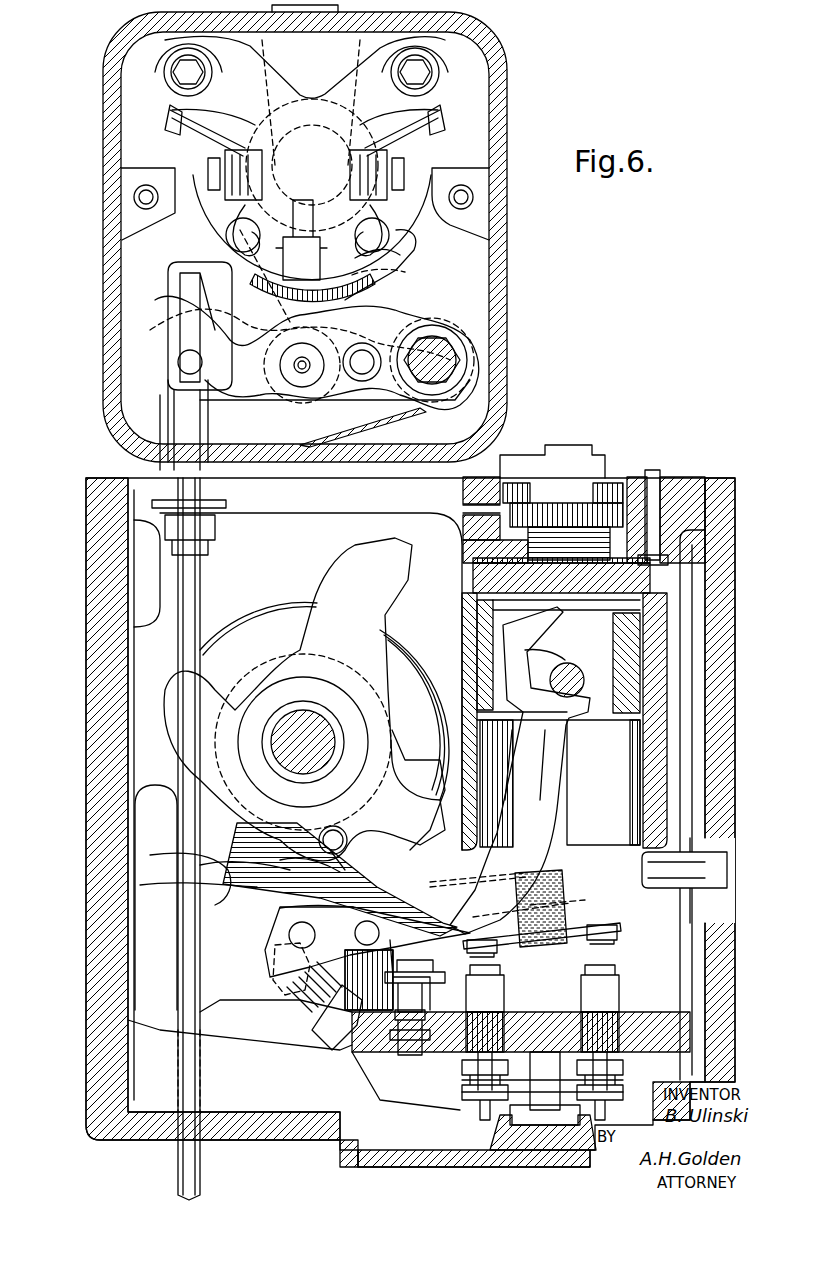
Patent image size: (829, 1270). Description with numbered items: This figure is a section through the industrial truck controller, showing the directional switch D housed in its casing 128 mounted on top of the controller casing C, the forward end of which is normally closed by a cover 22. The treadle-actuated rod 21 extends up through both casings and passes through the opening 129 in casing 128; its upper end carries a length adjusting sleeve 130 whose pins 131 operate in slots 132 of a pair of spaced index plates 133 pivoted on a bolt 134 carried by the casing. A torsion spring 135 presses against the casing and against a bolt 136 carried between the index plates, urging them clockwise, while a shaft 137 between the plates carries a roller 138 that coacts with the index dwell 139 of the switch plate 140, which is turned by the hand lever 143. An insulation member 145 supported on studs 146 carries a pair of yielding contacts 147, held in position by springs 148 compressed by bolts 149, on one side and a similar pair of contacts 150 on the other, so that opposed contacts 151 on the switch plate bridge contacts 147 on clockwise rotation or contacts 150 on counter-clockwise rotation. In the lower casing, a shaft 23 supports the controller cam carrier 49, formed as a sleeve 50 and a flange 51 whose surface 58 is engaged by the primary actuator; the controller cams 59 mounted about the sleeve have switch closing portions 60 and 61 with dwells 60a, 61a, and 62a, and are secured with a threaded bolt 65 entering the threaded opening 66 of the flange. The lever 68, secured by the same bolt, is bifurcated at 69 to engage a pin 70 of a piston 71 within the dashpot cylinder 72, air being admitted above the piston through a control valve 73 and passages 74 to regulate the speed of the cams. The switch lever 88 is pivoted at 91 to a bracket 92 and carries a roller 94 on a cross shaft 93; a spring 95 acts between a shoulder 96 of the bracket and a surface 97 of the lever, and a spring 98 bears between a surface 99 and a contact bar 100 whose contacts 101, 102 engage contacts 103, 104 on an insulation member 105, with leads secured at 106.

The directional switch D is at (509, 59).
The controller casing C is at (92, 752).
The casing 128 is at (505, 98).
The opening 129 is at (160, 430).
The length adjusting sleeve 130 is at (168, 405).
The pins 131 is at (178, 362).
The slots 132 is at (180, 300).
The index plates 133 is at (380, 316).
The bolt 134 is at (444, 352).
The torsion spring 135 is at (395, 422).
The bolt 136 is at (360, 366).
The shaft 137 is at (300, 372).
The roller 138 is at (285, 400).
The index dwell 139 is at (405, 272).
The switch plate 140 is at (385, 260).
The hand lever 143 is at (300, 70).
The insulation member 145 is at (305, 82).
The studs 146 is at (172, 72).
The yielding contacts 147 is at (226, 237).
The springs 148 is at (180, 133).
The bolts 149 is at (225, 165).
The contacts 150 is at (390, 246).
The opposed contacts 151 is at (255, 290).
The rod 21 is at (204, 566).
The cover 22 is at (735, 552).
The shaft 23 is at (300, 718).
The controller cam carrier 49 is at (408, 663).
The sleeve 50 is at (335, 700).
The flange 51 is at (257, 672).
The surface 58 is at (203, 648).
The controller cams 59 is at (414, 752).
The switch closing portion 60 is at (215, 890).
The dwell 60a is at (230, 862).
The switch closing portion 61 is at (285, 925).
The double length dwell 61a is at (290, 866).
The double length dwell 62a is at (352, 866).
The threaded bolt 65 is at (332, 826).
The threaded opening 66 is at (258, 838).
The lever 68 is at (545, 780).
The bifurcated end 69 is at (549, 652).
The pin 70 is at (580, 670).
The piston 71 is at (655, 648).
The dashpot cylinder 72 is at (682, 678).
The control valve 73 is at (570, 467).
The passages 74 is at (480, 520).
The switch lever 88 is at (567, 890).
The pivot 91 is at (380, 938).
The bracket 92 is at (400, 962).
The cross shaft 93 is at (290, 938).
The roller 94 is at (275, 910).
The spring 95 is at (285, 1000).
The shoulder 96 is at (312, 1032).
The surface 97 is at (273, 982).
The spring 98 is at (567, 908).
The surface 99 is at (560, 866).
The contact bar 100 is at (590, 925).
The contact 101 is at (500, 952).
The contact 102 is at (618, 934).
The contact 103 is at (500, 970).
The contact 104 is at (612, 970).
The insulation member 105 is at (648, 1012).
The lead connection 106 is at (465, 1085).